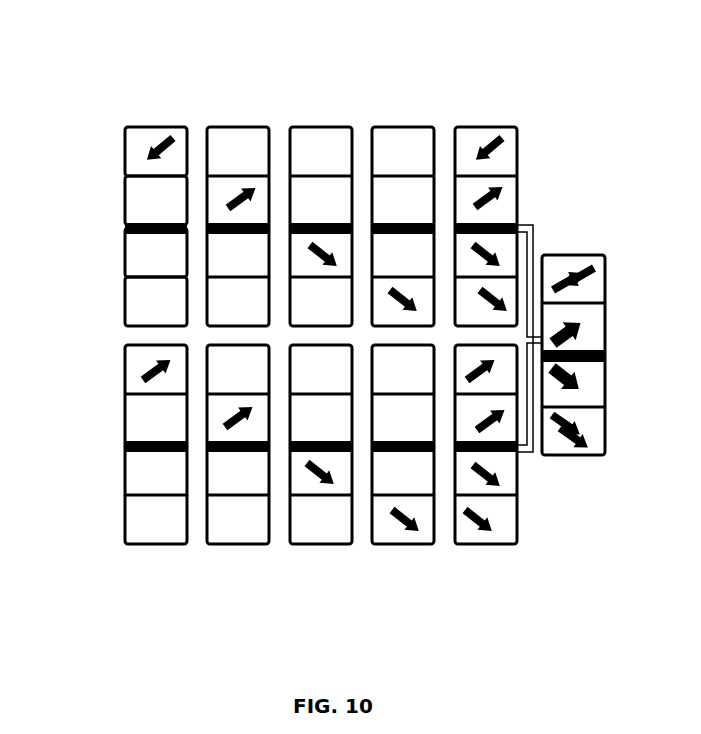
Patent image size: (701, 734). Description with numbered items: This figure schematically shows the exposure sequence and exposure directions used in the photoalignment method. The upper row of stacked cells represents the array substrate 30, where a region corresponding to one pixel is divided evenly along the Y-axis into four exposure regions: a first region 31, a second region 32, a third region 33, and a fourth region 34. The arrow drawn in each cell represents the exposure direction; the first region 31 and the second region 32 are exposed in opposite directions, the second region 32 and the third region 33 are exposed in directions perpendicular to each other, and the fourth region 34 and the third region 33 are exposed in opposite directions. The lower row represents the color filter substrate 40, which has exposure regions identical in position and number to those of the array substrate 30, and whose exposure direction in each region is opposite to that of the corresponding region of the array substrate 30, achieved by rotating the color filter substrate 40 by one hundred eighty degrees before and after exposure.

The array substrate 30 is at (47, 15).
The first region 31 is at (140, 157).
The second region 32 is at (140, 203).
The third region 33 is at (143, 260).
The fourth region 34 is at (140, 305).
The color filter substrate 40 is at (30, 663).